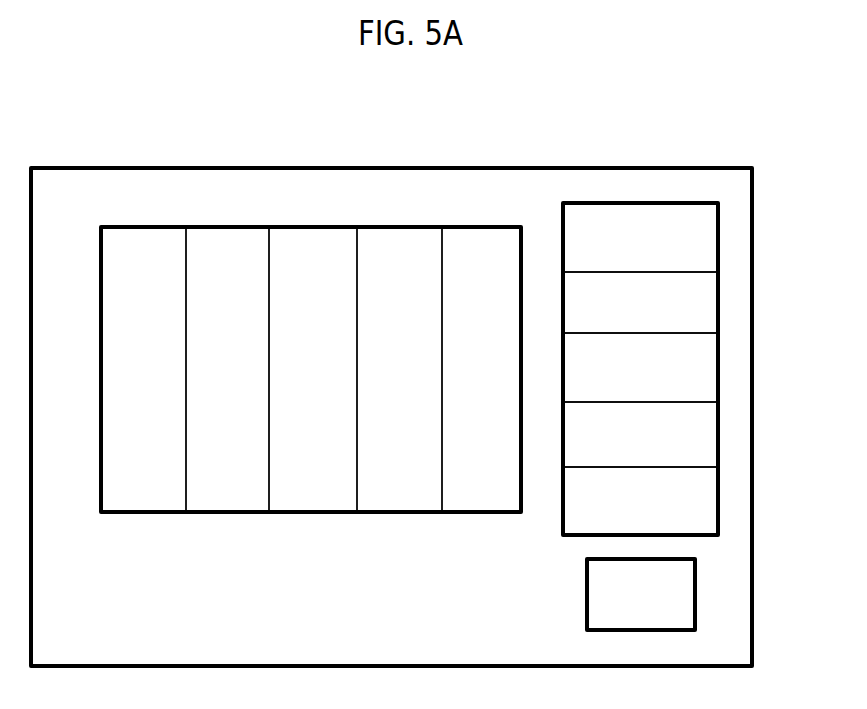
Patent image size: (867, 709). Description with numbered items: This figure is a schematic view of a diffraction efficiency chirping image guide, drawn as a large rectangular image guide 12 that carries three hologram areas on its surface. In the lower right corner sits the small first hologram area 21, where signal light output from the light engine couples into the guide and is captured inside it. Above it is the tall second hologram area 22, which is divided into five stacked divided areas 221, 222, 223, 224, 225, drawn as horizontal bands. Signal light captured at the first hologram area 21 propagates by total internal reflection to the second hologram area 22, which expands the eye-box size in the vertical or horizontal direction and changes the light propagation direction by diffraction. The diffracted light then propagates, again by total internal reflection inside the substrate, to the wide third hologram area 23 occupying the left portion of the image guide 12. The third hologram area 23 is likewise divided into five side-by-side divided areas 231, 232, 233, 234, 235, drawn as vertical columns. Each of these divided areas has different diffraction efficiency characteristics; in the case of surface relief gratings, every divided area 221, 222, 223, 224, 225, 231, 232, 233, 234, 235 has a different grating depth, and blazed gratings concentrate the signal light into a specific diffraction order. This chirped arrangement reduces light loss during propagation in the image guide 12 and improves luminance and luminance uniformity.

The image guide 12 is at (420, 168).
The first hologram area 21 is at (680, 596).
The second hologram area 22 is at (655, 203).
The divided area of second hologram area 221 is at (705, 508).
The divided area of second hologram area 222 is at (705, 450).
The divided area of second hologram area 223 is at (705, 379).
The divided area of second hologram area 224 is at (705, 310).
The divided area of second hologram area 225 is at (705, 254).
The third hologram area 23 is at (101, 314).
The divided area of third hologram area 231 is at (467, 239).
The divided area of third hologram area 232 is at (386, 240).
The divided area of third hologram area 233 is at (300, 239).
The divided area of third hologram area 234 is at (210, 239).
The divided area of third hologram area 235 is at (139, 238).